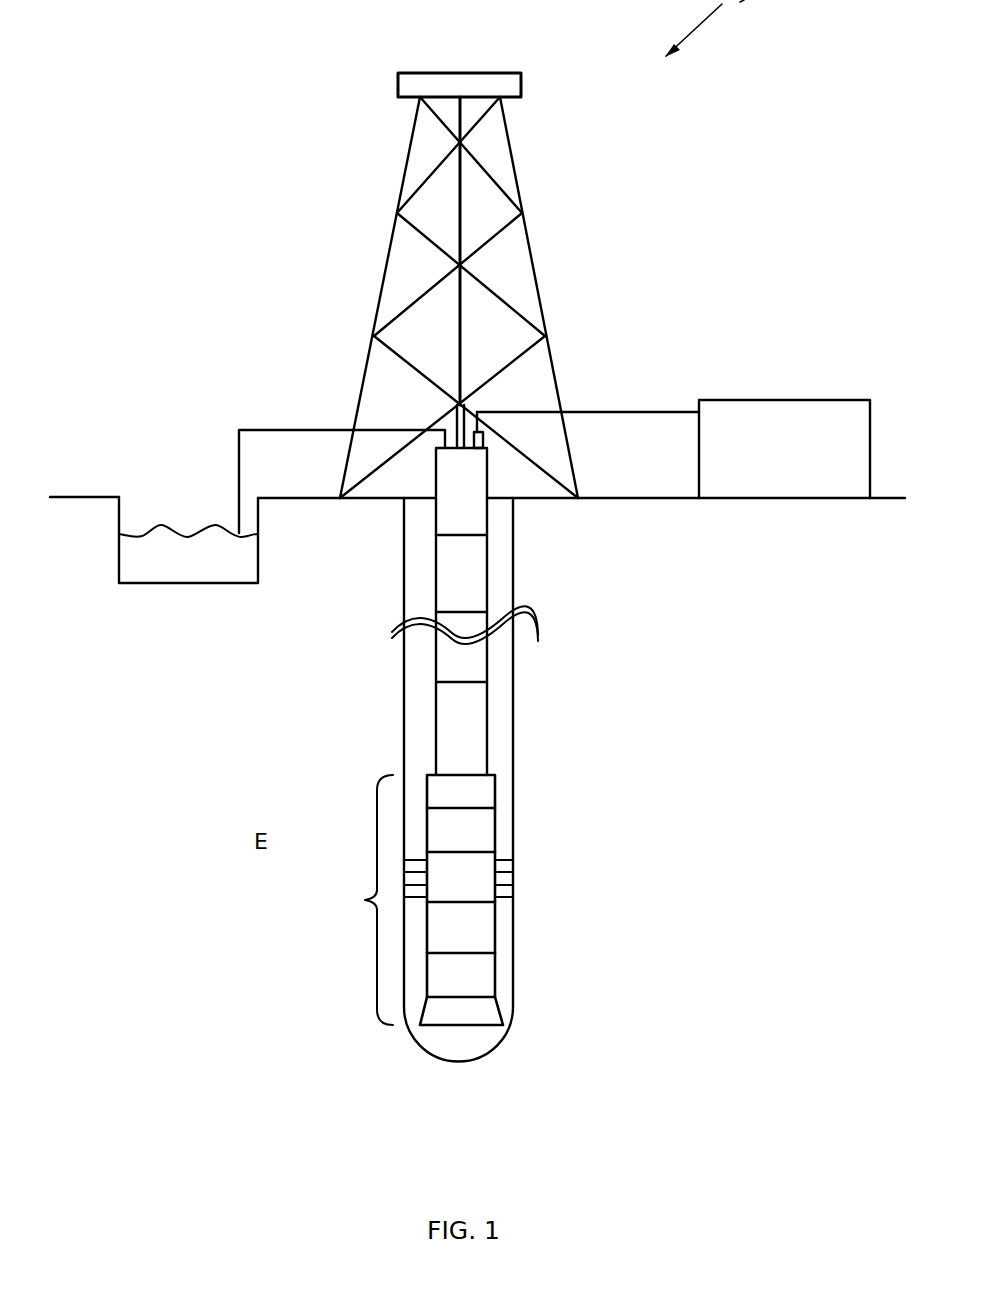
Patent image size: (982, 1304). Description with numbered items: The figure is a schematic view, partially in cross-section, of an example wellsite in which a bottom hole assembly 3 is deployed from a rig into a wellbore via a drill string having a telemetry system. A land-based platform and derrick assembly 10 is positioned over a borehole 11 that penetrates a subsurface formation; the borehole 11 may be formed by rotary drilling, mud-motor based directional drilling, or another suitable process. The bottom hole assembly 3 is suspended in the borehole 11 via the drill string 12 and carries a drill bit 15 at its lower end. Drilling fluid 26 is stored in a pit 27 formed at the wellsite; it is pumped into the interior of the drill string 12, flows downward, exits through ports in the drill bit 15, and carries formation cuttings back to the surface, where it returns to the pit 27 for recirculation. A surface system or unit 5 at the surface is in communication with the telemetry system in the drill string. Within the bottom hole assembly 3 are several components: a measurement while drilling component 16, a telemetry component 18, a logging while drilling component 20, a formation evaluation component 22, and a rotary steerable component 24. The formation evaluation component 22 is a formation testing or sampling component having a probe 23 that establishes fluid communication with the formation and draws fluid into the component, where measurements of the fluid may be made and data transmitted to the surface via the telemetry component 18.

The land-based platform and derrick assembly 10 is at (510, 140).
The surface control / processing unit 5 is at (734, 400).
The pit 27 is at (258, 548).
The drilling fluid 26 is at (158, 577).
The borehole 11 is at (513, 558).
The drill string 12 is at (444, 591).
The drill bit 15 is at (495, 1015).
The telemetry component 18 is at (487, 793).
The measurement while drilling (MWD) component 16 is at (487, 830).
The formation evaluation component 22 is at (487, 860).
The probe 23 is at (508, 878).
The logging while drilling (LWD) component 20 is at (487, 938).
The rotary steerable (RS) component 24 is at (487, 978).
The bottom hole assembly 3 is at (365, 900).